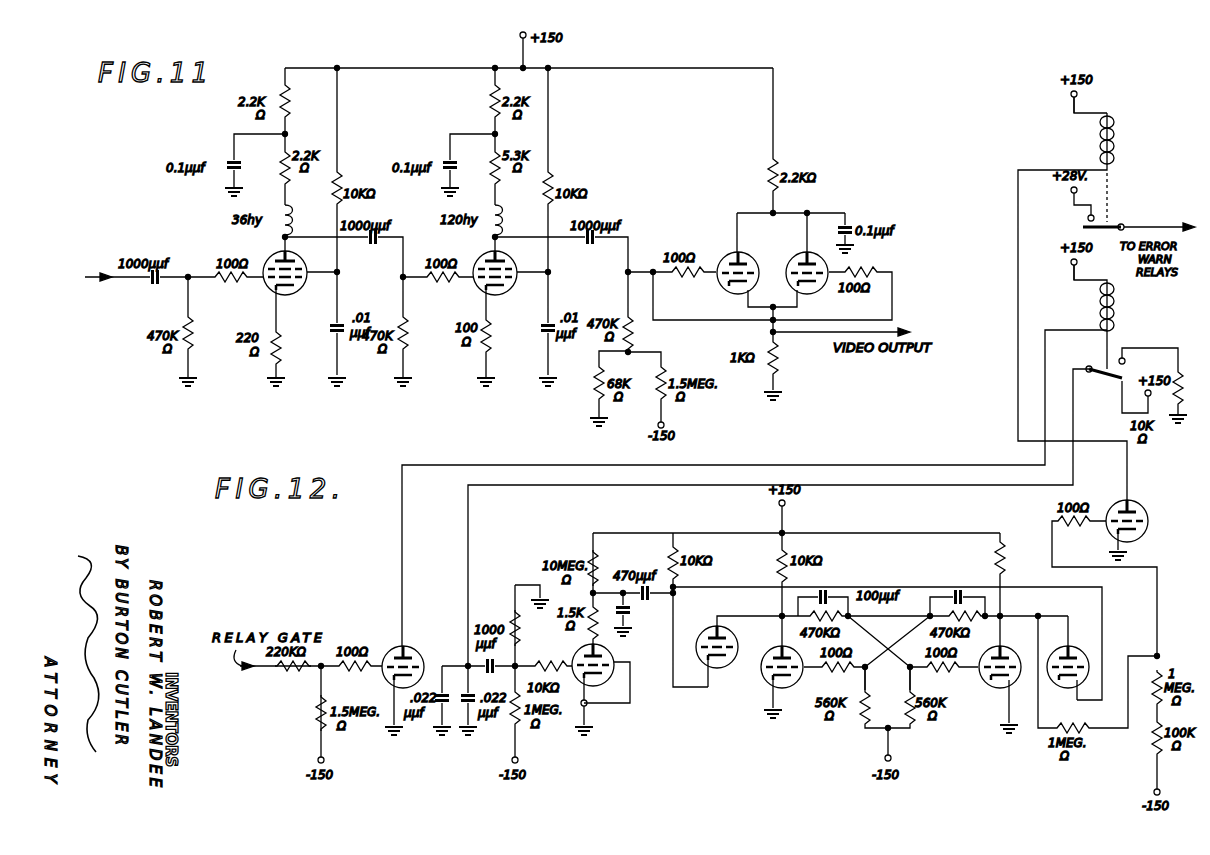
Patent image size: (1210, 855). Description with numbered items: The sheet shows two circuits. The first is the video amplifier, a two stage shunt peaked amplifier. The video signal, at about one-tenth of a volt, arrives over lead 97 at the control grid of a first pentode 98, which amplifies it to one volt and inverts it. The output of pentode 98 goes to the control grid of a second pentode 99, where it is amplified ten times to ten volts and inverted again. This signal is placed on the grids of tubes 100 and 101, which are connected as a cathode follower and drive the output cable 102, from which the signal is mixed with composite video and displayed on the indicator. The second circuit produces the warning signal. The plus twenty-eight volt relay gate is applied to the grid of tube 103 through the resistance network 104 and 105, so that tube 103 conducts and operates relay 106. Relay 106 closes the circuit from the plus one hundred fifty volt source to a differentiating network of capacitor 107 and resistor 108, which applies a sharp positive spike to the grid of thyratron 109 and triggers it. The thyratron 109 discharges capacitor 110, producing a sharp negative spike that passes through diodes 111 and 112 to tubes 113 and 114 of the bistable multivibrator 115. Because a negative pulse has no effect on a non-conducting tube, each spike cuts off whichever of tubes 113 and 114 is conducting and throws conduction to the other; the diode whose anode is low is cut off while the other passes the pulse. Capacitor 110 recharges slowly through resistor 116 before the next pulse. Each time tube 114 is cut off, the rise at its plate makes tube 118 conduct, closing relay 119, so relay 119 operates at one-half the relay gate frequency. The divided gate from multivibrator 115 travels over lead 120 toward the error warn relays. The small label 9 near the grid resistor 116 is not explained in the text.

In FIG. 12, the gate input resistor 9 is at (541, 546).
In FIG. 11, the lead 97 is at (187, 280).
In FIG. 11, the first pentode 98 is at (299, 258).
In FIG. 11, the pentode 99 is at (506, 289).
In FIG. 11, the tube 100 is at (728, 257).
In FIG. 11, the tube 101 is at (792, 257).
In FIG. 11, the output cable 102 is at (797, 335).
In FIG. 12, the tube 103 is at (415, 648).
In FIG. 12, the resistance network 104 is at (289, 674).
In FIG. 12, the resistance network 105 is at (315, 717).
In FIG. 12, the relay 106 is at (1133, 338).
In FIG. 12, the capacitor 107 is at (492, 668).
In FIG. 12, the resistor 108 is at (519, 632).
In FIG. 12, the thyratron 109 is at (611, 676).
In FIG. 12, the capacitor 110 is at (632, 619).
In FIG. 12, the diode 111 is at (717, 660).
In FIG. 12, the diode 112 is at (1078, 648).
In FIG. 12, the tube 113 is at (766, 688).
In FIG. 12, the tube 114 is at (995, 688).
In FIG. 12, the bistable multivibrator 115 is at (899, 685).
In FIG. 12, the resistor 116 is at (600, 561).
In FIG. 12, the tube 118 is at (1138, 504).
In FIG. 12, the relay 119 is at (1058, 236).
In FIG. 12, the lead 120 is at (1137, 225).